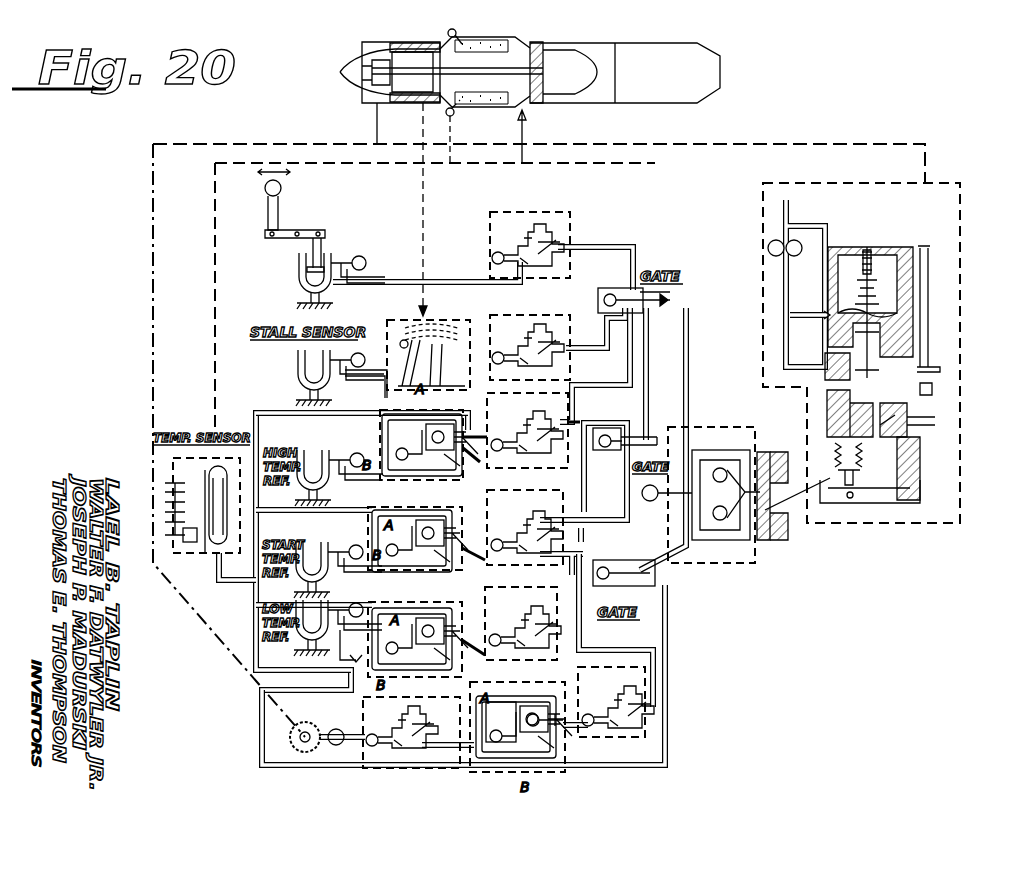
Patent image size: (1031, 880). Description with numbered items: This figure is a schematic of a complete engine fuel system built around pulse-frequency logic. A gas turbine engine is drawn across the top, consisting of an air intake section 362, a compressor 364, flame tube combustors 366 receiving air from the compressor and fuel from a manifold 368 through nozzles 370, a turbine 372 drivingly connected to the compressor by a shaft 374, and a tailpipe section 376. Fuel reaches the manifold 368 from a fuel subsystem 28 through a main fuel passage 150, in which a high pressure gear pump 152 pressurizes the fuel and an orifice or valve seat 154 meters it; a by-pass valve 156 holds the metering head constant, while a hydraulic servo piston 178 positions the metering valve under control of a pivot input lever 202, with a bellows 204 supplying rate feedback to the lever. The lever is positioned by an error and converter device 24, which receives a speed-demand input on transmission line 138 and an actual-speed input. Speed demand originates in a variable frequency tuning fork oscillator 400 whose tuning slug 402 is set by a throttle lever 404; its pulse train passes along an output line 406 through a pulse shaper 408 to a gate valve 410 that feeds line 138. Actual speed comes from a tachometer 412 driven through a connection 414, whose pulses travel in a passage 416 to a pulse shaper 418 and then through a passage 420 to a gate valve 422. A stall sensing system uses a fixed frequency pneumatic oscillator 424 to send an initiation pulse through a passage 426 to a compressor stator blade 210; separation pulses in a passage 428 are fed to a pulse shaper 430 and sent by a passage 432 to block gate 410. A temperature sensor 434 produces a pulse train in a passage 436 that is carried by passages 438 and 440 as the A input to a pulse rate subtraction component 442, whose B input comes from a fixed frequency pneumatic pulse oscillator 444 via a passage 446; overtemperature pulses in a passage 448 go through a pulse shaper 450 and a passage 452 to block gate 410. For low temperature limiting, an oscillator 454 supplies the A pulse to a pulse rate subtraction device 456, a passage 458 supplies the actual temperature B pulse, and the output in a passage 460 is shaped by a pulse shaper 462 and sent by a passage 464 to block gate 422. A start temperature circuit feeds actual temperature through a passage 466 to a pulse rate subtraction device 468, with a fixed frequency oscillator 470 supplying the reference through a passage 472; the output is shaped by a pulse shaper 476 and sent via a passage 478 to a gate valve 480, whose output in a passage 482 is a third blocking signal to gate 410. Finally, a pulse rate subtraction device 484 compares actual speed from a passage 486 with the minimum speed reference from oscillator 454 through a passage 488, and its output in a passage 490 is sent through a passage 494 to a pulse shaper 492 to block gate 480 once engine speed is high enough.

The error and converter device 24 is at (755, 562).
The fuel subsystem 28 is at (1002, 260).
The transmission line 138 is at (690, 406).
The main fuel passage 150 is at (830, 143).
The high pressure gear pump 152 is at (768, 248).
The orifice or valve seat 154 is at (935, 378).
The by-pass valve 156 is at (880, 335).
The hydraulic servo piston 178 is at (928, 420).
The pivot input lever 202 is at (862, 500).
The bellows 204 is at (853, 464).
The compressor stator blade 210 is at (402, 340).
The air intake section 362 is at (372, 42).
The compressor 364 is at (408, 42).
The flame tube combustors 366 is at (520, 40).
The manifold 368 is at (455, 115).
The nozzles 370 is at (460, 36).
The turbine 372 is at (548, 45).
The shaft 374 is at (570, 72).
The tailpipe section 376 is at (675, 86).
The variable frequency tuning fork oscillator 400 is at (288, 286).
The tuning slug 402 is at (322, 252).
The throttle lever 404 is at (280, 204).
The output line 406 is at (428, 284).
The pulse shaper 408 is at (572, 214).
The gate valve 410 is at (672, 294).
The tachometer 412 is at (310, 722).
The connection 414 is at (150, 262).
The passage 416 is at (372, 765).
The pulse shaper 418 is at (411, 732).
The passage 420 is at (573, 768).
The gate valve 422 is at (656, 584).
The fixed frequency pneumatic oscillator 424 is at (298, 366).
The passage 426 is at (345, 388).
The passage 428 is at (444, 392).
The fluid amplifier 430 is at (526, 318).
The passage 432 is at (596, 350).
The temperature sensor 434 is at (196, 556).
The passage 436 is at (234, 584).
The passage 438 is at (262, 528).
The passage 440 is at (254, 412).
The pulse rate subtraction component 442 is at (383, 442).
The fixed frequency pneumatic pulse oscillator 444 is at (328, 485).
The passage 446 is at (388, 484).
The passage 448 is at (478, 468).
The pulse shaper 450 is at (510, 470).
The passage 452 is at (612, 388).
The oscillator 454 is at (340, 606).
The pulse rate subtraction device 456 is at (428, 604).
The passage 458 is at (282, 672).
The passage 460 is at (458, 664).
The pulse shaper 462 is at (523, 623).
The passage 464 is at (572, 560).
The passage 466 is at (335, 512).
The pulse rate subtraction device 468 is at (428, 508).
The fixed frequency oscillator 470 is at (322, 570).
The passage 472 is at (382, 580).
The pulse shaper 476 is at (525, 527).
The passage 478 is at (594, 524).
The gate valve 480 is at (606, 452).
The passage 482 is at (651, 360).
The pulse rate subtraction device 484 is at (498, 722).
The passage 486 is at (505, 690).
The passage 488 is at (258, 722).
The passage 490 is at (575, 738).
The pulse shaper 492 is at (648, 730).
The passage 494 is at (584, 638).